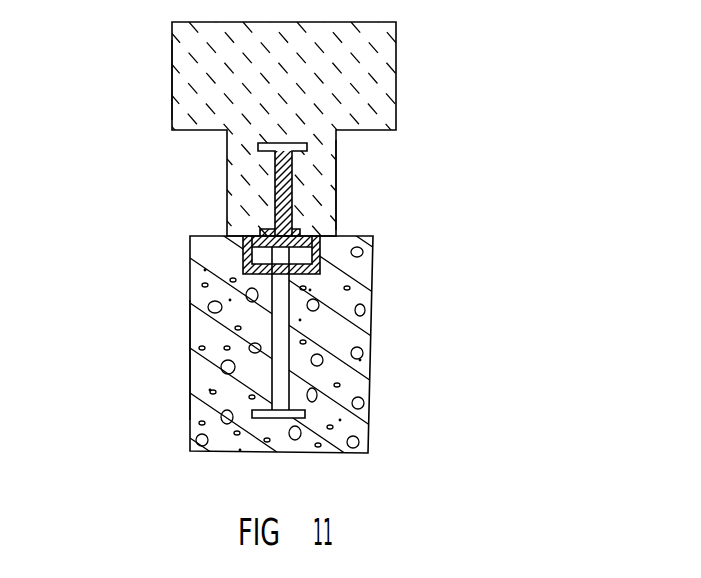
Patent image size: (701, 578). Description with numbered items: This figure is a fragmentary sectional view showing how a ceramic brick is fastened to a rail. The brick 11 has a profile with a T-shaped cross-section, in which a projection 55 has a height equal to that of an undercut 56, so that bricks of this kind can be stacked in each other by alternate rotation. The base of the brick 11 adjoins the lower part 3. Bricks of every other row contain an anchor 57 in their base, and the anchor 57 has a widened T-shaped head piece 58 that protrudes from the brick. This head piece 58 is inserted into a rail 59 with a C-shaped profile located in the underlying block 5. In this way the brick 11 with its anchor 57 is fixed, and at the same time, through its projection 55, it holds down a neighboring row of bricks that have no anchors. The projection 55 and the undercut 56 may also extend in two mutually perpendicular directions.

The brick 11 is at (378, 58).
The projection 55 is at (172, 78).
The undercut 56 is at (336, 185).
The anchor 57 is at (278, 191).
The head piece 58 is at (320, 265).
The rail 59 is at (252, 253).
The block 5 is at (368, 344).
The lower part 3 is at (190, 358).